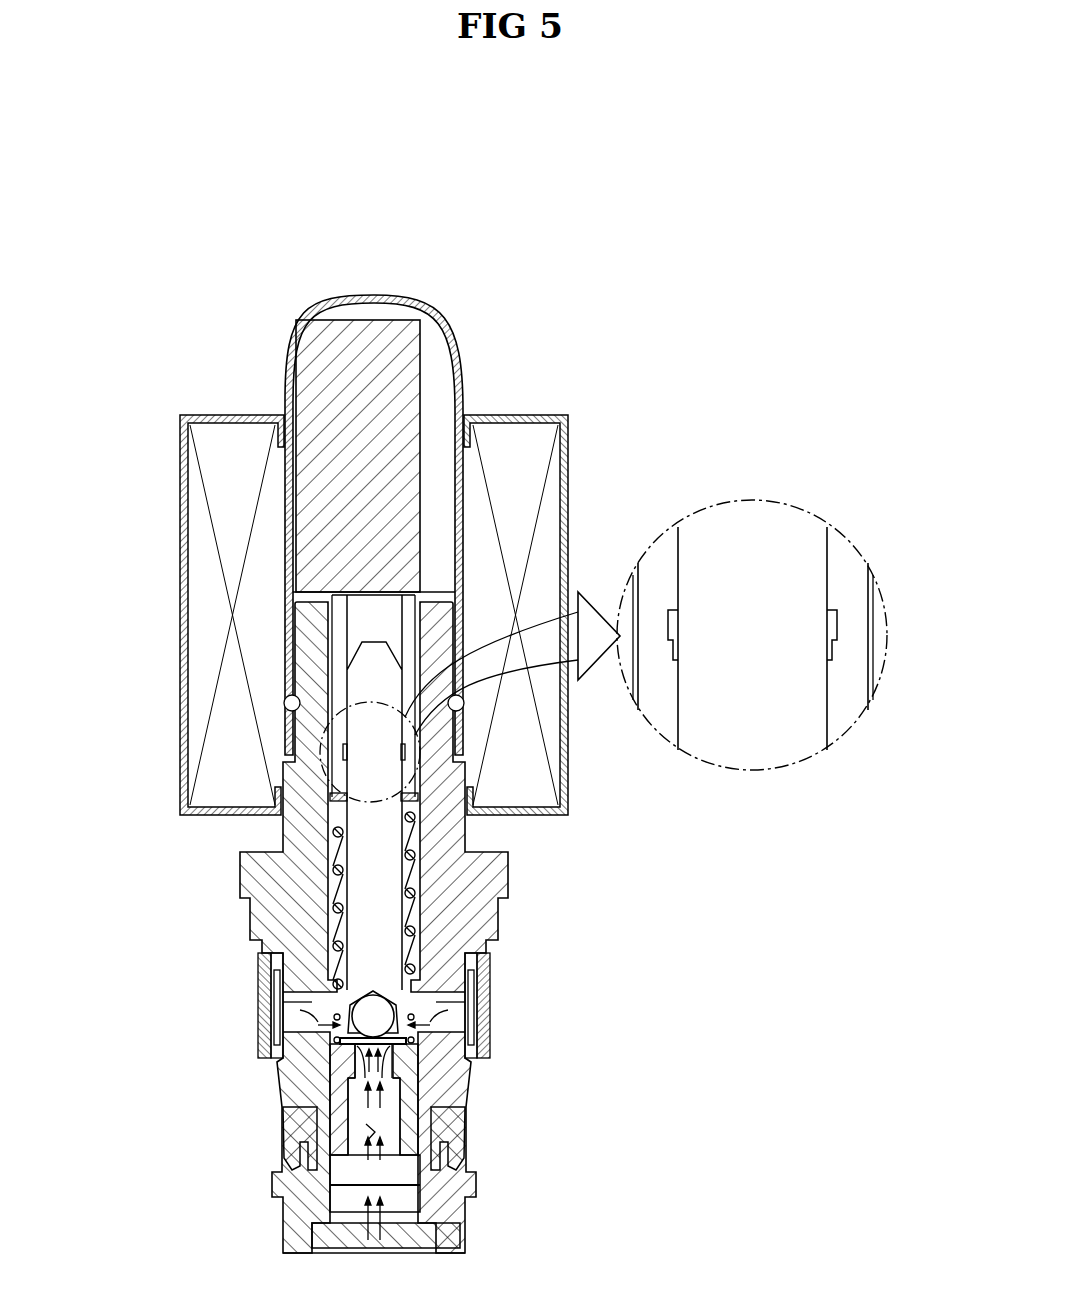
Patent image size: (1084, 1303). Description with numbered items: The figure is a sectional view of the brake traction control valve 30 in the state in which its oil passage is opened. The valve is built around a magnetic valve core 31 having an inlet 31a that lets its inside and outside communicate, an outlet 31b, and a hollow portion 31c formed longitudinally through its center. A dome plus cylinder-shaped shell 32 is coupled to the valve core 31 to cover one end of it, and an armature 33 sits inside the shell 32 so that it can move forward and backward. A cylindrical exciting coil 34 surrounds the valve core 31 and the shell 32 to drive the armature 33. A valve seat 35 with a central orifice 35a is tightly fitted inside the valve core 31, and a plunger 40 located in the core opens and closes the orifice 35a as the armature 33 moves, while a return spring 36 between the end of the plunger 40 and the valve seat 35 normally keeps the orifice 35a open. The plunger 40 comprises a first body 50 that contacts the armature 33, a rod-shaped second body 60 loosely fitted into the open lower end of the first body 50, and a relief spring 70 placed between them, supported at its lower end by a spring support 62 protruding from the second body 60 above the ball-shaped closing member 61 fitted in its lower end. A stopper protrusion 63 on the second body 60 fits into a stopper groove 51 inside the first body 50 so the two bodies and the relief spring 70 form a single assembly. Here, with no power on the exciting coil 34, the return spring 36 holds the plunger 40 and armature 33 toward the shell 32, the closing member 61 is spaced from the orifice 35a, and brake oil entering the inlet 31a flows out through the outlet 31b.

The traction control valve 30 is at (266, 321).
The magnetic valve core 31 is at (490, 877).
The inlet 31a is at (310, 1028).
The outlet 31b is at (372, 1140).
The hollow portion 31c is at (412, 826).
The shell 32 is at (430, 318).
The armature 33 is at (416, 343).
The exciting coil 34 is at (508, 414).
The valve seat 35 is at (412, 1107).
The orifice 35a is at (390, 1052).
The return spring 36 is at (332, 1043).
The plunger 40 is at (128, 712).
The first body 50 is at (292, 704).
The stopper groove 51 is at (832, 607).
The second body 60 is at (365, 733).
The closing member 61 is at (382, 1018).
The spring support 62 is at (405, 982).
The stopper protrusion 63 is at (670, 642).
The relief spring 70 is at (330, 834).